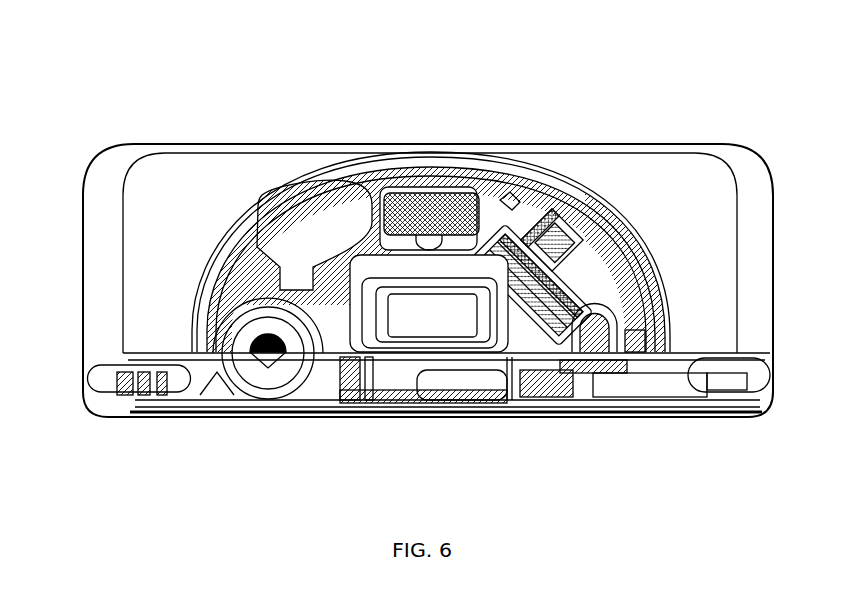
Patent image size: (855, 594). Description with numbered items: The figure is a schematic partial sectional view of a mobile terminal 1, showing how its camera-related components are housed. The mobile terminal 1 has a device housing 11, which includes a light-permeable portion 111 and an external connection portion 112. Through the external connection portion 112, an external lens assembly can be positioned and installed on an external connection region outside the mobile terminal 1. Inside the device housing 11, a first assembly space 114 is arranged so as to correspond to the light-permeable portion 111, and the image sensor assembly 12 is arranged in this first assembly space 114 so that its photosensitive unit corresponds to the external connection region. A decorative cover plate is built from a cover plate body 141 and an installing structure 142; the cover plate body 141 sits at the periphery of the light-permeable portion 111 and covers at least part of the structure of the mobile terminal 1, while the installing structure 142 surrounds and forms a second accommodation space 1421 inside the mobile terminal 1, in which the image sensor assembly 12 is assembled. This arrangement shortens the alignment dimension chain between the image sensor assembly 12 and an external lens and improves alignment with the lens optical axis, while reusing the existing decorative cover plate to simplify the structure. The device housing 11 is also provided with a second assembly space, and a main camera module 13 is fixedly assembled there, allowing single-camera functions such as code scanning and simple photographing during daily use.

The mobile terminal 1 is at (120, 100).
The device housing 11 is at (226, 172).
The light-permeable portion 111 is at (446, 266).
The external connection portion 112 is at (198, 318).
The image sensor assembly 12 is at (420, 313).
The main camera module 13 is at (287, 350).
The first assembly space 114 is at (322, 352).
The cover plate body 141 is at (488, 186).
The installing structure 142 is at (388, 355).
The second accommodation space 1421 is at (413, 378).